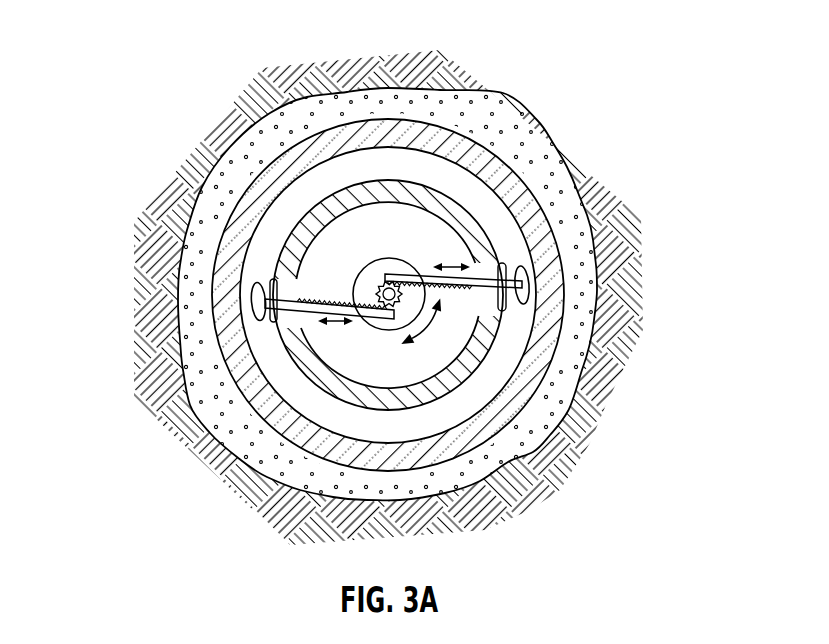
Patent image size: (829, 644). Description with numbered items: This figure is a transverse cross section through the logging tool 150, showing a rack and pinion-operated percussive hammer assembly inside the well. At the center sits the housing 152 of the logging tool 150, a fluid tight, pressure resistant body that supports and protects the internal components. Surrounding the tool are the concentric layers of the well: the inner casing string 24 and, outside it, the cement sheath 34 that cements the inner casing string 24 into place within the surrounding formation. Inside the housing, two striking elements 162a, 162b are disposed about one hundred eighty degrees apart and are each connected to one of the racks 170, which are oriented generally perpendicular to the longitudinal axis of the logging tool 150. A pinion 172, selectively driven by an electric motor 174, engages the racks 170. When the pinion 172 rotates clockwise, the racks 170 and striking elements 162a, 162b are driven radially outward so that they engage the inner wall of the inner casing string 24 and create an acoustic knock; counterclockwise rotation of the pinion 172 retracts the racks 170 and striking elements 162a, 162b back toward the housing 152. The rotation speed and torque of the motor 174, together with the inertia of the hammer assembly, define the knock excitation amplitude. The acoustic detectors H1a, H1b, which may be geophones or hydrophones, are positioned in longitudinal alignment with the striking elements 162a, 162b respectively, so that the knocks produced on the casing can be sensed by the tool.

The inner casing string 24 is at (590, 226).
The cement sheath 34 is at (558, 185).
The logging tool 150 is at (458, 202).
The housing 152 is at (575, 412).
The striking element 162a is at (530, 288).
The striking element 162b is at (252, 303).
The racks 170 is at (427, 275).
The pinion 172 is at (378, 289).
The electric motor 174 is at (388, 331).
The acoustic detector H1a is at (500, 296).
The acoustic detector H1b is at (258, 320).